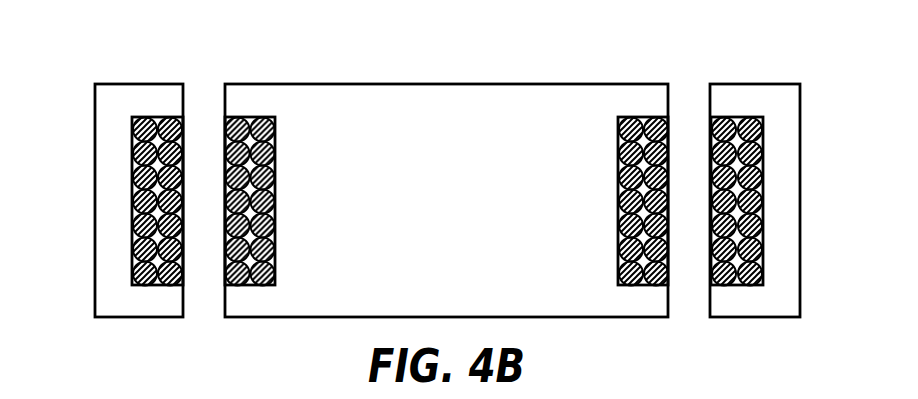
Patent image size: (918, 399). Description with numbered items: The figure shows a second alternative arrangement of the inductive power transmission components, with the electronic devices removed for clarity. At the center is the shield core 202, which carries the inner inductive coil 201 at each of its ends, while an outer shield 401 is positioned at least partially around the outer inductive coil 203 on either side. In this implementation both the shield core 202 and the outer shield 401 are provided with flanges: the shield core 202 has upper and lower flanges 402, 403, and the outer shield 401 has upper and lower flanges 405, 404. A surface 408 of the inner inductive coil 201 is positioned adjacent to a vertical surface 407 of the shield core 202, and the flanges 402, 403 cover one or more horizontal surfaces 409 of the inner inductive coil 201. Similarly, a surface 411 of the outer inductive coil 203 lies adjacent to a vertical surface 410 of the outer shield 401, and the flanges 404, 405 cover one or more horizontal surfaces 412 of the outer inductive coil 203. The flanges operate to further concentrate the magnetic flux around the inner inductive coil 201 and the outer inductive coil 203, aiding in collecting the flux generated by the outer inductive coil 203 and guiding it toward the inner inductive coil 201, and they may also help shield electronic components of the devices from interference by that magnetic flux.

The inner inductive coil 201 is at (223, 205).
The shield core 202 is at (447, 84).
The outer inductive coil 203 is at (186, 198).
The outer shield 401 is at (95, 207).
The flange 402 is at (236, 84).
The flange 403 is at (248, 317).
The flange 404 is at (160, 317).
The flange 405 is at (163, 84).
The vertical surface of the shield core 407 is at (278, 213).
The surface of the inner inductive coil 408 is at (278, 227).
The horizontal surface of the inner inductive coil 409 is at (246, 117).
The vertical surface of the outer shield 410 is at (764, 142).
The surface of the outer inductive coil 411 is at (764, 153).
The horizontal surface of the outer inductive coil 412 is at (752, 117).